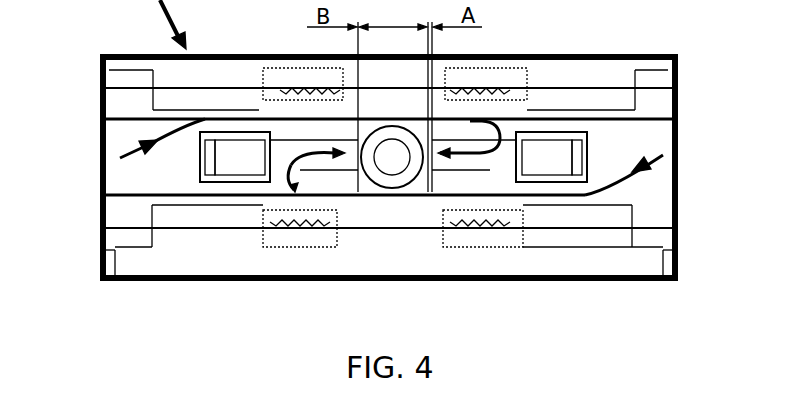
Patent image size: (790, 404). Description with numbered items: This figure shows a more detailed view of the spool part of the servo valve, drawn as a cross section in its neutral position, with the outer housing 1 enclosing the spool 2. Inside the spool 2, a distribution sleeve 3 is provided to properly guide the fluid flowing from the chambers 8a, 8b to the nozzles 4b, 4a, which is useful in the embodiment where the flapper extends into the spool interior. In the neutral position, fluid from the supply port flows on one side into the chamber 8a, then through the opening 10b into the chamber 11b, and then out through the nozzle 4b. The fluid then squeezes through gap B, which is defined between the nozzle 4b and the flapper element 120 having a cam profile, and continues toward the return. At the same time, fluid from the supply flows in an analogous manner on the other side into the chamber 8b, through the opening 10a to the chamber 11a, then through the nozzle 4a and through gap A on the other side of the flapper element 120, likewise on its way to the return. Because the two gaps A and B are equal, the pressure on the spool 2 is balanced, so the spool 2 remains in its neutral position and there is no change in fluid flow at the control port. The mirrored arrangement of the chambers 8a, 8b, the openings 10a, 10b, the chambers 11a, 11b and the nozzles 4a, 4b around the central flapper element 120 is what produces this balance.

The housing 1 is at (120, 263).
The spool 2 is at (120, 210).
The distribution sleeve 3 is at (437, 197).
The nozzle 4a is at (469, 138).
The nozzle 4b is at (318, 135).
The chamber 8a is at (639, 197).
The chamber 8b is at (168, 185).
The opening 10a is at (515, 135).
The opening 10b is at (295, 196).
The chamber 11a is at (504, 175).
The chamber 11b is at (278, 134).
The flapper element 120 is at (384, 200).